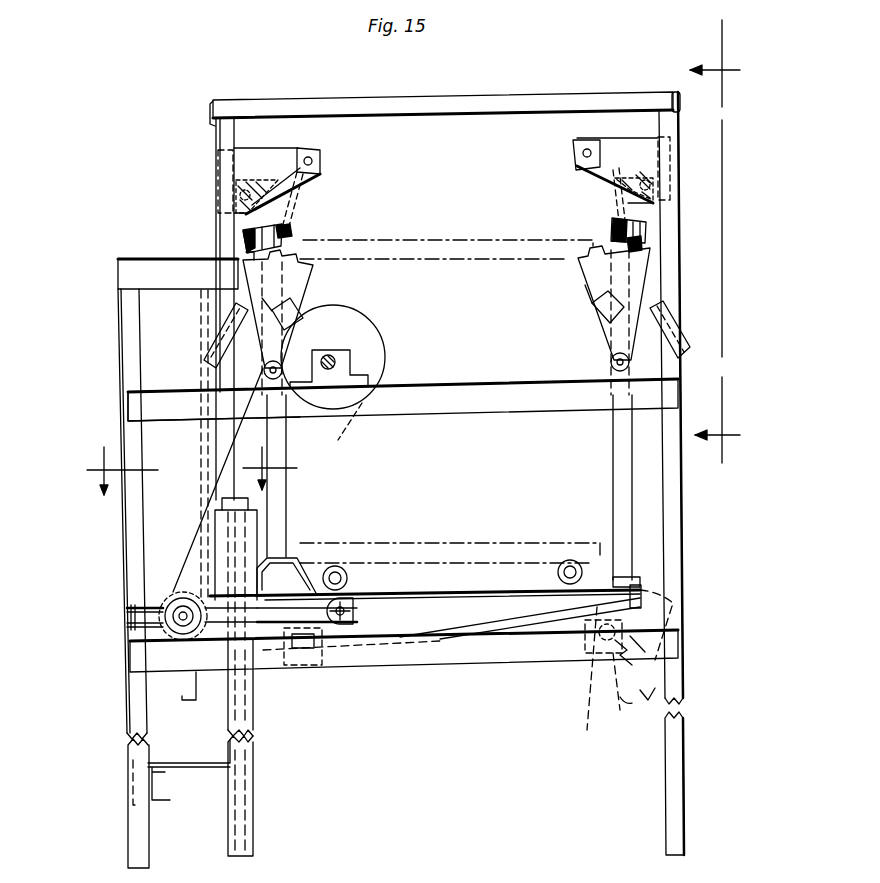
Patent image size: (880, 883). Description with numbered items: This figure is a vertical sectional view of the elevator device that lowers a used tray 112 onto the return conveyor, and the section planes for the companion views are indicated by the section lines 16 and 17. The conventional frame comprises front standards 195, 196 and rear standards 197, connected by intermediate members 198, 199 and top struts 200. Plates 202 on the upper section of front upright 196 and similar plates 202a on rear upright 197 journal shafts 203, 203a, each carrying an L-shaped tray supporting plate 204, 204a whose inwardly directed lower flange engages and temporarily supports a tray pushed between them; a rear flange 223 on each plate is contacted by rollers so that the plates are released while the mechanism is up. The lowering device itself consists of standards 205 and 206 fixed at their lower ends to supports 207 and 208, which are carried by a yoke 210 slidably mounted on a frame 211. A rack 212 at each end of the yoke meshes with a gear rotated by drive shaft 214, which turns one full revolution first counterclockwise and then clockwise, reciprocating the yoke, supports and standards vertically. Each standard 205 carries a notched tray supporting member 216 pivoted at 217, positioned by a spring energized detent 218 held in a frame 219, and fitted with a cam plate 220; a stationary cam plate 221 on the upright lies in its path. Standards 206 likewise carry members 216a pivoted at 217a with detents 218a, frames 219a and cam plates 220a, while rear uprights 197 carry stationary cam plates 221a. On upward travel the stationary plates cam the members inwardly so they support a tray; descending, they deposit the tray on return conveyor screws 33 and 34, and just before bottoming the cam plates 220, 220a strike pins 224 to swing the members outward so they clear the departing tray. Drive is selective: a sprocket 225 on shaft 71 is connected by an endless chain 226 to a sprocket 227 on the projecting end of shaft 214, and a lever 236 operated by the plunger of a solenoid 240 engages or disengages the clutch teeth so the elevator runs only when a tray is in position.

The section line 16- 16 is at (729, 241).
The section line 17- 17 is at (192, 471).
The return conveyor screw 33 is at (568, 560).
The return conveyor screw 34 is at (347, 570).
The shaft 71 is at (356, 364).
The tray 112 is at (447, 222).
The front standard 195 is at (126, 338).
The front standard 196 is at (218, 137).
The rear standard 197 is at (684, 548).
The intermediate member 198 is at (462, 395).
The intermediate member 199 is at (520, 650).
The top strut 200 is at (513, 100).
The plate 202 is at (263, 160).
The plate 202a is at (624, 155).
The shaft 203 is at (322, 155).
The shaft 203a is at (577, 156).
The tray supporting plate 204 is at (296, 204).
The tray supporting plate 204a is at (612, 208).
The standard 205 is at (282, 435).
The standard 206 is at (620, 424).
The support 207 is at (285, 578).
The support 208 is at (568, 607).
The yoke 210 is at (256, 826).
The frame 211 is at (258, 780).
The rack 212 is at (207, 380).
The drive shaft 214 is at (180, 614).
The tray supporting member 216 is at (300, 284).
The tray supporting member 216a is at (578, 272).
The pivot 217 is at (278, 366).
The pivot 217a is at (611, 362).
The spring energized detent 218 is at (242, 243).
The detent 218a is at (647, 247).
The frame 219 is at (283, 228).
The frame 219a is at (645, 228).
The cam plate 220 is at (287, 308).
The cam plate 220a is at (592, 306).
The stationary cam plate 221 is at (203, 322).
The stationary cam plate 221a is at (688, 340).
The rear flange 223 is at (248, 160).
The pin 224 is at (335, 675).
The sprocket 225 is at (385, 336).
The endless chain 226 is at (215, 592).
The sprocket 227 is at (167, 598).
The lever 236 is at (283, 642).
The solenoid 240 is at (356, 612).